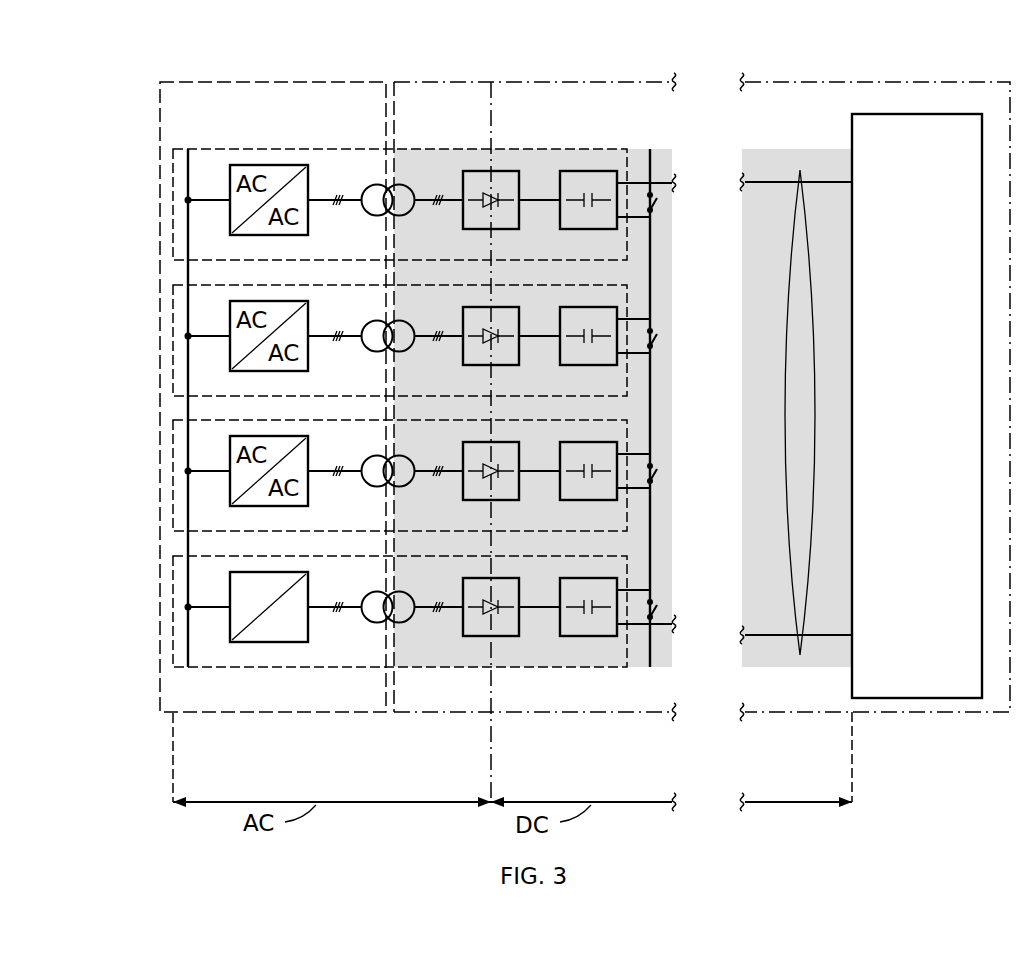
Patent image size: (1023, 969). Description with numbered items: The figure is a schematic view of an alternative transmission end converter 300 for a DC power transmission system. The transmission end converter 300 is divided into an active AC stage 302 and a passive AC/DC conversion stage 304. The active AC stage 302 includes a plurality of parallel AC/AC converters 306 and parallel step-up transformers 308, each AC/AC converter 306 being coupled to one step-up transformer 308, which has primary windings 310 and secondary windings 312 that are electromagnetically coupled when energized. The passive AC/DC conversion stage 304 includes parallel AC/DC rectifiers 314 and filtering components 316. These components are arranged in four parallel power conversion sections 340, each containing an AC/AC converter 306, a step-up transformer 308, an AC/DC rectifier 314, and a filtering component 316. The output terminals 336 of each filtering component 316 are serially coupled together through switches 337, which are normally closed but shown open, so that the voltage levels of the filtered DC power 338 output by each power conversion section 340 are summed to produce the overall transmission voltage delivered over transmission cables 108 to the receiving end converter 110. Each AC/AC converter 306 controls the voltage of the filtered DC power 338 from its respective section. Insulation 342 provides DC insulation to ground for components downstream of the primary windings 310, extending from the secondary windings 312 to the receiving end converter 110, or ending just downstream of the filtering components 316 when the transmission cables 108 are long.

The transmission cables 108 is at (800, 655).
The receiving end converter 110 is at (915, 114).
The transmission end converter 300 is at (572, 70).
The active AC stage 302 is at (378, 737).
The passive AC/DC conversion stage 304 is at (584, 737).
The AC/AC converter 306 is at (270, 645).
The step-up transformer 308 is at (367, 635).
The primary windings 310 is at (375, 626).
The secondary windings 312 is at (397, 586).
The AC/DC rectifier 314 is at (478, 638).
The filtering component 316 is at (590, 638).
The output terminals 336 is at (641, 640).
The switches 337 is at (656, 204).
The filtered DC power 338 is at (642, 183).
The power conversion section 340 is at (166, 213).
The insulation 342 is at (437, 165).